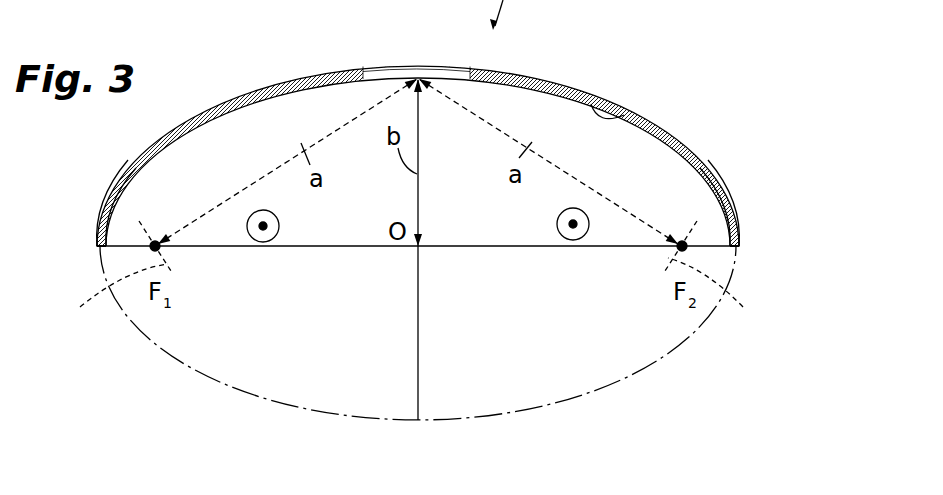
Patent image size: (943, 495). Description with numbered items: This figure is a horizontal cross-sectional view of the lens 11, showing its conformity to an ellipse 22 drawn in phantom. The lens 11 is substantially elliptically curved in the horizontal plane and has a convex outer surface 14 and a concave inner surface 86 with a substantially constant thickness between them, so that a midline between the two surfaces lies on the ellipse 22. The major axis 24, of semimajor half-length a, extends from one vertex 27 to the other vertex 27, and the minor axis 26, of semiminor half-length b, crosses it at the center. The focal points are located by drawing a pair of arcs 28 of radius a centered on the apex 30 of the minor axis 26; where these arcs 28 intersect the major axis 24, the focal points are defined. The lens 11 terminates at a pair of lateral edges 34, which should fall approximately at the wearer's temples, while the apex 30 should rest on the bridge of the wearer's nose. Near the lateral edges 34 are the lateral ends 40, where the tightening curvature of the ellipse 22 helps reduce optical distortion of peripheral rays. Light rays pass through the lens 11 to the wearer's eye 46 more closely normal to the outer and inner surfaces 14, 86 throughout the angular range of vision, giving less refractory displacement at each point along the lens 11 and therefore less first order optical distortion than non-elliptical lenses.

The lens 11 is at (418, 151).
The lens outer surface 14 is at (583, 86).
The ellipse 22 is at (646, 368).
The major axis 24 is at (375, 248).
The minor axis 26 is at (419, 316).
The vertex 27 is at (97, 248).
The arcs 28 is at (408, 296).
The apex 30 is at (418, 67).
The lateral edges 34 is at (100, 250).
The lateral ends 40 is at (108, 178).
The wearer's eye 46 is at (250, 241).
The lens inner surface 86 is at (622, 117).